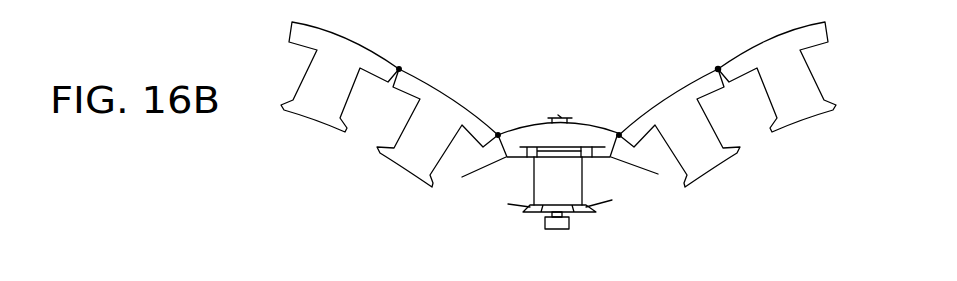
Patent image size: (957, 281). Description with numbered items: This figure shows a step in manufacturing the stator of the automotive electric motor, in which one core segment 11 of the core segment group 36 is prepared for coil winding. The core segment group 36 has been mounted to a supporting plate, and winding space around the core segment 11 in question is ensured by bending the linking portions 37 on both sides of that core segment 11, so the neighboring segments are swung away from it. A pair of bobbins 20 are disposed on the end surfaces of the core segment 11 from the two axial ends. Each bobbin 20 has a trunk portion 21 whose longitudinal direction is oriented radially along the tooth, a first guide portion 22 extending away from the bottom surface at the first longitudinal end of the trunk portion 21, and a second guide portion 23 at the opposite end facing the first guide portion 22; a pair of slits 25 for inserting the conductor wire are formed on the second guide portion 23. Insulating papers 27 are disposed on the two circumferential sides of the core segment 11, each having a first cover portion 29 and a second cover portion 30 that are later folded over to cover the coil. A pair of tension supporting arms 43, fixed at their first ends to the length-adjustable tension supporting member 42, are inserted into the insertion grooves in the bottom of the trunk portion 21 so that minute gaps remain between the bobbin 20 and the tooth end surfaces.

The core segment 11 is at (738, 48).
The core segment group 36 is at (428, 70).
The linking portion 37 is at (717, 71).
The bobbin 20 is at (578, 140).
The second guide portion 23 is at (555, 150).
The slit 25 is at (585, 154).
The insulating paper 27 is at (477, 177).
The second cover portion 30 is at (462, 177).
The first cover portion 29 is at (515, 205).
The trunk portion 21 is at (577, 185).
The first guide portion 22 is at (538, 211).
The tension supporting arm 43 is at (558, 222).
The tension supporting member 42 is at (570, 226).